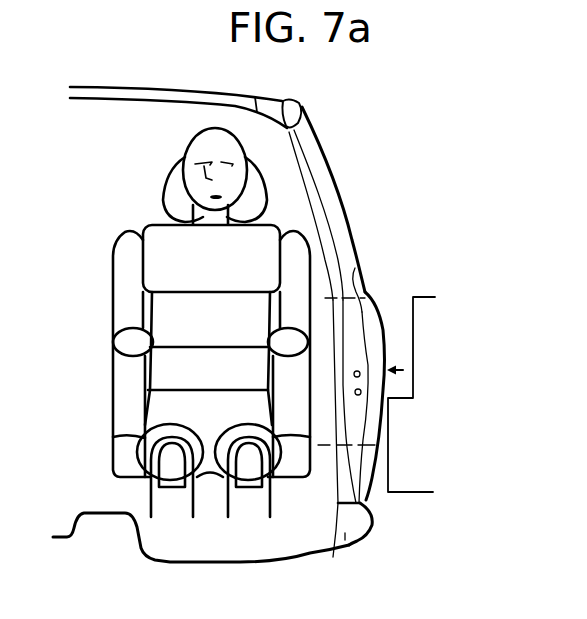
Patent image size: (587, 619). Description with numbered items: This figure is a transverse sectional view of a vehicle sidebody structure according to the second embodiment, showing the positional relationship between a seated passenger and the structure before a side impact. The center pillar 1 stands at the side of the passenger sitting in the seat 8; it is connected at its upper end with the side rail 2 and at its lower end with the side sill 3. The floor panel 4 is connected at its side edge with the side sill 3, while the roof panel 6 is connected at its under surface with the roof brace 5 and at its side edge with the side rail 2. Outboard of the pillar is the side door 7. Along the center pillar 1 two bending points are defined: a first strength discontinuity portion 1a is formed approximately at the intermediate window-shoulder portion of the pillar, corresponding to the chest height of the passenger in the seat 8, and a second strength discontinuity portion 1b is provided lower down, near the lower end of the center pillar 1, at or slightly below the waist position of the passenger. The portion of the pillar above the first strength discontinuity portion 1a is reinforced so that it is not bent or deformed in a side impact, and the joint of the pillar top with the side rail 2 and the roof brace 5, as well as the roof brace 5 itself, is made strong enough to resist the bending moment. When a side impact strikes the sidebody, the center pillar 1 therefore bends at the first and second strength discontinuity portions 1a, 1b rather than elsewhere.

The center pillar 1 is at (369, 305).
The first strength discontinuity portion 1a is at (362, 260).
The second strength discontinuity portion 1b is at (345, 440).
The side rail 2 is at (300, 110).
The side sill 3 is at (347, 553).
The floor panel 4 is at (217, 568).
The roof brace 5 is at (115, 100).
The roof panel 6 is at (163, 85).
The side door 7 is at (378, 305).
The seat 8 is at (110, 453).